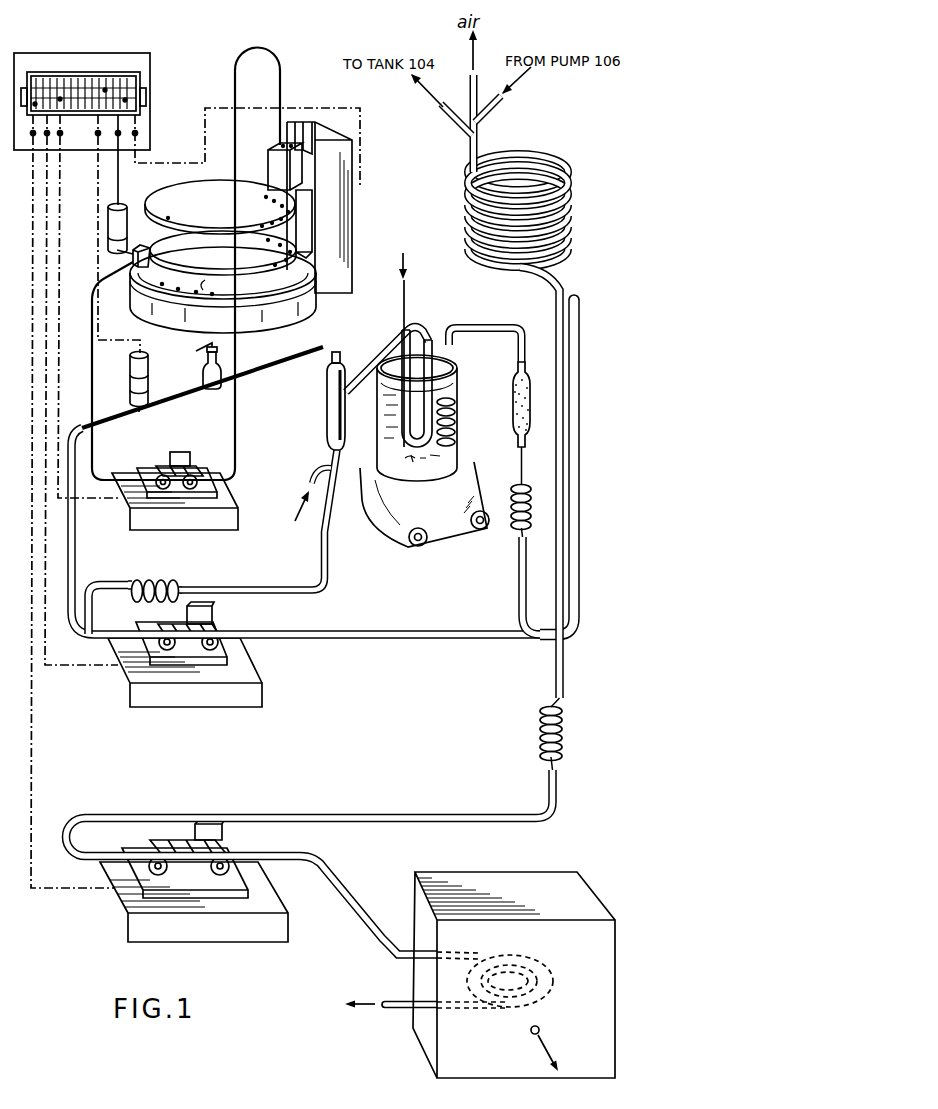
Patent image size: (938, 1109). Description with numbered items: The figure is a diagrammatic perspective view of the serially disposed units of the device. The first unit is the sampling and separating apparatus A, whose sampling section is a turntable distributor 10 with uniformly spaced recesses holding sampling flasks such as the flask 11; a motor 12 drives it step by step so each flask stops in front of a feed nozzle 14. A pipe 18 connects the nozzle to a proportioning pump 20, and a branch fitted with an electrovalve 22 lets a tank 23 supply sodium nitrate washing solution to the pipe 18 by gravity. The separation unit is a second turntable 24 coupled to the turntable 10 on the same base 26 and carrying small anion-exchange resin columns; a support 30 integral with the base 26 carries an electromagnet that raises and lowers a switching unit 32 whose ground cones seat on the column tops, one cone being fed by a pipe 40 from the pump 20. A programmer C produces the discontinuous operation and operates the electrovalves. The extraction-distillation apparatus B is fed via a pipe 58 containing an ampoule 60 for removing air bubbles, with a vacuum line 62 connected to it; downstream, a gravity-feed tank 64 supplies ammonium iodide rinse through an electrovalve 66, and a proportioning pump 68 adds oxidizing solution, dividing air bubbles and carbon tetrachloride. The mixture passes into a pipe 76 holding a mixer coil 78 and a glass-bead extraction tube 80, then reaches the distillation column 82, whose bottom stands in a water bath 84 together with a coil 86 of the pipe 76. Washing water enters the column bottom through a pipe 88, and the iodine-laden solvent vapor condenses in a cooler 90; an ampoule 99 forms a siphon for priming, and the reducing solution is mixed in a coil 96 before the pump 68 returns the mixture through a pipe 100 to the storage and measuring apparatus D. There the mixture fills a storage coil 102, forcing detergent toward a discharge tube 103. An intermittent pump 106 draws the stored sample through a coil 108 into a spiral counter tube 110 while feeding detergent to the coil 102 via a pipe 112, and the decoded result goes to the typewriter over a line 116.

The turntable distributor 10 is at (250, 292).
The sampling flask 11 is at (217, 270).
The motor 12 is at (290, 323).
The feed nozzle 14 is at (152, 256).
The pipe 18 is at (104, 462).
The proportioning pump 20 is at (196, 451).
The electrovalve 22 is at (99, 240).
The tank 23 is at (126, 204).
The second turntable 24 is at (203, 215).
The base 26 is at (279, 264).
The support 30 is at (345, 245).
The switching unit 32 is at (270, 162).
The pipe 40 is at (233, 458).
The pipe 58 is at (100, 563).
The ampoule 60 is at (203, 382).
The vacuum line 62 is at (194, 349).
The gravity-feed tank 64 is at (130, 376).
The electrovalve 66 is at (130, 400).
The proportioning pump 68 is at (273, 676).
The pipe 76 is at (519, 597).
The coil 78 is at (531, 508).
The extraction tube 80 is at (513, 404).
The distillation column 82 is at (428, 340).
The water bath 84 is at (456, 453).
The coil 86 is at (457, 413).
The pipe 88 is at (400, 302).
The cooler 90 is at (378, 358).
The coil 96 is at (166, 580).
The ampoule 99 is at (328, 411).
The pipe 100 is at (580, 355).
The coil 102 is at (562, 250).
The tube 103 is at (461, 123).
The pump 106 is at (174, 948).
The coil 108 is at (540, 741).
The spiral counter tube 110 is at (543, 966).
The pipe 112 is at (493, 108).
The line 116 is at (556, 1049).
The sampling and separating apparatus A is at (352, 222).
The extraction-distillation apparatus B is at (449, 330).
The programmer C is at (166, 86).
The storage and measuring apparatus D is at (356, 894).